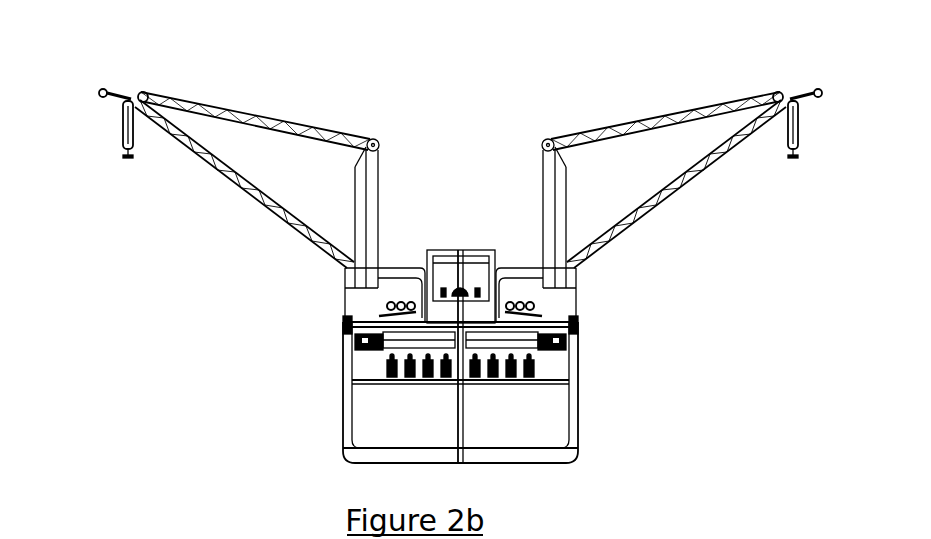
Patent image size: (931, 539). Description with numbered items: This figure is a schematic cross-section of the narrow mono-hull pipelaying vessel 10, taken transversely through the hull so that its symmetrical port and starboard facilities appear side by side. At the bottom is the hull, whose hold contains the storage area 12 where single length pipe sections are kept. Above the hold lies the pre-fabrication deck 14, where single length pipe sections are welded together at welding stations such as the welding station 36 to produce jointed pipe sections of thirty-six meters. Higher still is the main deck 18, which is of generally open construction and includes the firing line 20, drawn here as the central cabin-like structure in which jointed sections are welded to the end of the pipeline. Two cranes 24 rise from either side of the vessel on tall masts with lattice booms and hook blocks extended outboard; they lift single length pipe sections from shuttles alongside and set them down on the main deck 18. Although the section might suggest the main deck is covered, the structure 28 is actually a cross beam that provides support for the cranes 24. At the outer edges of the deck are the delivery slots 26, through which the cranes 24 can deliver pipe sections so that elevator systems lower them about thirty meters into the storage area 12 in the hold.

The pipelaying vessel 10 is at (310, 429).
The storage area 12 is at (556, 421).
The pre-fabrication deck 14 is at (560, 370).
The main deck 18 is at (505, 306).
The firing line 20 is at (468, 278).
The cranes 24 is at (635, 127).
The delivery slots 26 is at (343, 333).
The cross beam 28 is at (395, 270).
The welding station 36 is at (352, 356).